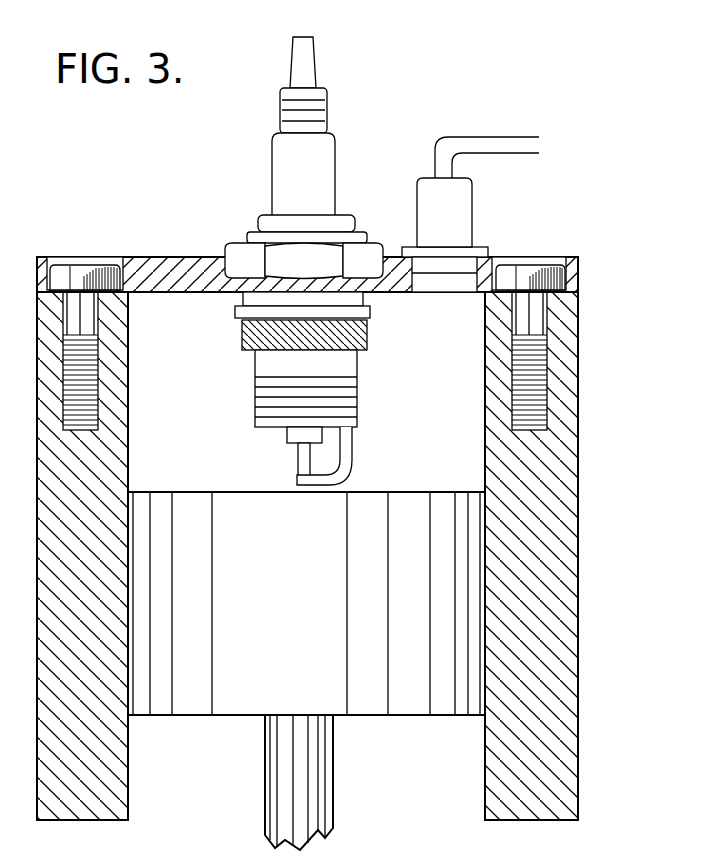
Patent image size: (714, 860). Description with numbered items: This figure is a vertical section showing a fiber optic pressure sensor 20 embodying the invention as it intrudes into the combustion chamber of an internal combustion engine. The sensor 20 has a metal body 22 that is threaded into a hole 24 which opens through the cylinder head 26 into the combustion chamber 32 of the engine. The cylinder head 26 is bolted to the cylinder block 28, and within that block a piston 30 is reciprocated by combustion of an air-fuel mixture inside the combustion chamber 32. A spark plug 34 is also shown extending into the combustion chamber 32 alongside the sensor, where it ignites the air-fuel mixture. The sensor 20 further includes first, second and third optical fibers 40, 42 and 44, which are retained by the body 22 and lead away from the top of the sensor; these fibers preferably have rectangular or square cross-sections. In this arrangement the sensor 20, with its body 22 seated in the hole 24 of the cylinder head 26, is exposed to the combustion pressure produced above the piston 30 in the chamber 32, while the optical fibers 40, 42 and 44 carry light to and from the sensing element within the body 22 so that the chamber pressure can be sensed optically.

The fiber optic sensor 20 is at (501, 184).
The metal body 22 is at (464, 217).
The hole 24 is at (478, 270).
The cylinder head 26 is at (163, 257).
The cylinder block 28 is at (580, 350).
The piston 30 is at (448, 587).
The combustion chamber 32 is at (204, 392).
The spark plug 34 is at (320, 167).
The first optical fiber 40 is at (517, 136).
The second optical fiber 42 is at (487, 157).
The third optical fiber 44 is at (466, 119).